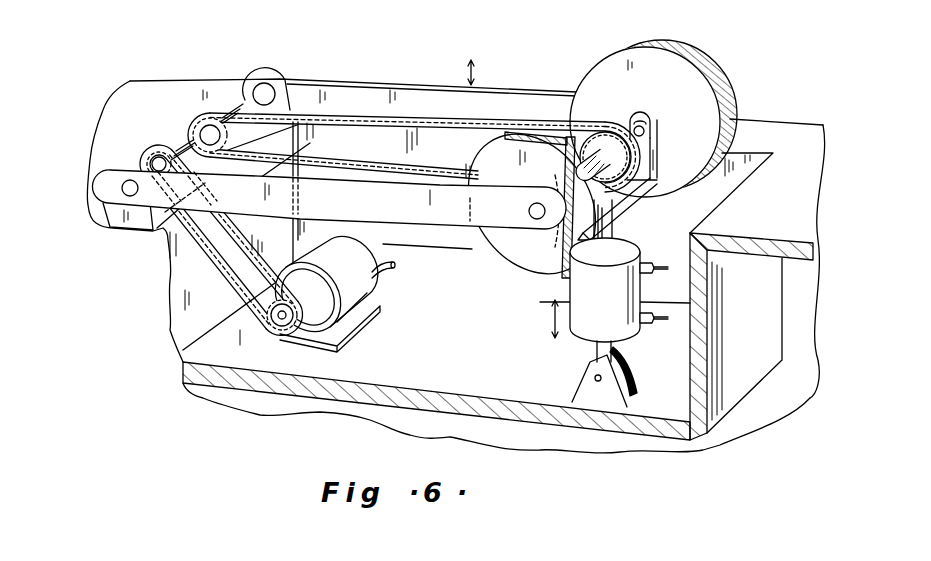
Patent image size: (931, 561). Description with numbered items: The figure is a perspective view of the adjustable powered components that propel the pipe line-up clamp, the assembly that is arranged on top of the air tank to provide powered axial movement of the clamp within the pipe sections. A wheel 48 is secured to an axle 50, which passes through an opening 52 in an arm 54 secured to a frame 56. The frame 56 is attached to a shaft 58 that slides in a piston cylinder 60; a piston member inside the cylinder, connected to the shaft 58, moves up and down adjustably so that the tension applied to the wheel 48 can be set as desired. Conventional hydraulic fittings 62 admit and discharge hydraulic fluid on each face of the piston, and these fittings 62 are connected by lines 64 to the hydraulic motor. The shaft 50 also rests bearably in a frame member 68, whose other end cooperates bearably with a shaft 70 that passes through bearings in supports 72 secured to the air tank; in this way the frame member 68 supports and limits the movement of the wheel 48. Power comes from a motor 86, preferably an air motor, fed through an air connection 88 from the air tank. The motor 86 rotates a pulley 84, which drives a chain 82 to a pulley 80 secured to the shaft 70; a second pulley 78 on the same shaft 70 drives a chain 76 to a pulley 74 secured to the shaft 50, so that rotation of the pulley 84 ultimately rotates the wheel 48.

The wheel 48 is at (613, 68).
The axle 50 is at (637, 120).
The opening 52 is at (652, 124).
The arm 54 is at (654, 152).
The frame 56 is at (632, 201).
The shaft 58 is at (613, 228).
The piston cylinder 60 is at (586, 327).
The hydraulic fittings 62 is at (648, 262).
The lines 64 is at (662, 269).
The frame member 68 is at (433, 217).
The shaft 70 is at (175, 150).
The supports 72 is at (269, 80).
The pulley 74 is at (601, 130).
The chain 76 is at (355, 110).
The pulley 78 is at (200, 120).
The pulley 80 is at (147, 161).
The chain 82 is at (221, 267).
The pulley 84 is at (272, 328).
The motor 86 is at (373, 290).
The air connection 88 is at (379, 263).